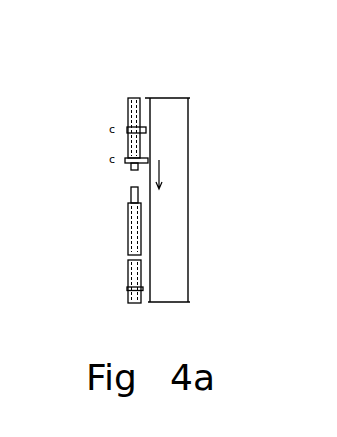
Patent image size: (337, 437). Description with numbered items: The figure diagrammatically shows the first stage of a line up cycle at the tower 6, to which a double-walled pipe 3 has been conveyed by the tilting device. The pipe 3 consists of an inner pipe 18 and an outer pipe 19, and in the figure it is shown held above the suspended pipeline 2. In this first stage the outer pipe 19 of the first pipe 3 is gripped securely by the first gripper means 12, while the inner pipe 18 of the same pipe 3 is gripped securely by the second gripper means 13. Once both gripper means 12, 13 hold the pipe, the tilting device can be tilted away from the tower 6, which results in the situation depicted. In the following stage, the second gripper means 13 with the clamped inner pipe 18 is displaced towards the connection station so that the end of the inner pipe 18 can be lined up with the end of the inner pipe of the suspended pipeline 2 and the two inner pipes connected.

The suspended pipeline 2 is at (129, 271).
The double-walled pipe 3 is at (133, 98).
The tower 6 is at (200, 135).
The first gripper means 12 is at (127, 130).
The second gripper means 13 is at (143, 160).
The inner pipe 18 is at (132, 170).
The outer pipe 19 is at (128, 112).